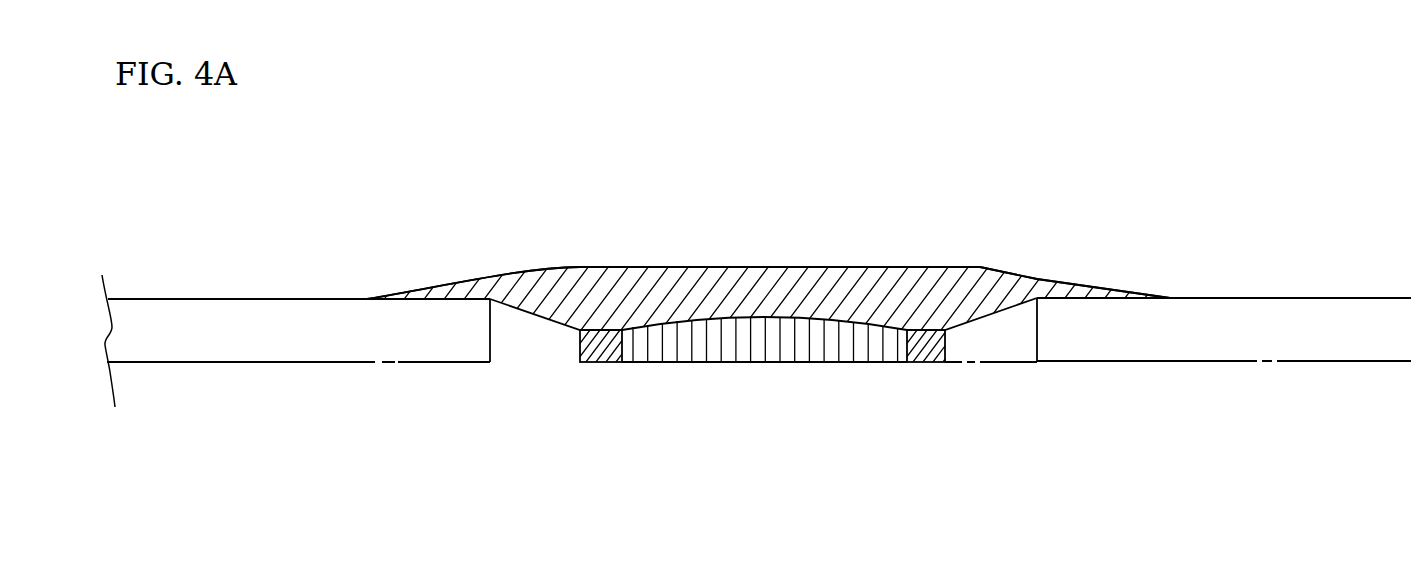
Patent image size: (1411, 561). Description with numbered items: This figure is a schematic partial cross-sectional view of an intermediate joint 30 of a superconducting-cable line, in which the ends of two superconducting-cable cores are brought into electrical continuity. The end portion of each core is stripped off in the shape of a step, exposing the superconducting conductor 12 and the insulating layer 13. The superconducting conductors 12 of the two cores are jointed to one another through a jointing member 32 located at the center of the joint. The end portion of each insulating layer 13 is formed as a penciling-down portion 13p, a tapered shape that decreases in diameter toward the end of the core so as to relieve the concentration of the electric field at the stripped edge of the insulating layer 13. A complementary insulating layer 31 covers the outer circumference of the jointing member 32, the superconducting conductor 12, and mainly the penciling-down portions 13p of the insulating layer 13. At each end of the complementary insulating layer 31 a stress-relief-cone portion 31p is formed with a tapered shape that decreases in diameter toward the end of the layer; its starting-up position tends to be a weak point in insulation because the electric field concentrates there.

The superconducting conductor 12 is at (607, 360).
The insulating layer 13 is at (263, 325).
The penciling-down portion 13p is at (523, 340).
The intermediate joint 30 is at (742, 283).
The complementary insulating layer 31 is at (815, 267).
The stress-relief-cone portion 31p is at (500, 277).
The jointing member 32 is at (757, 350).